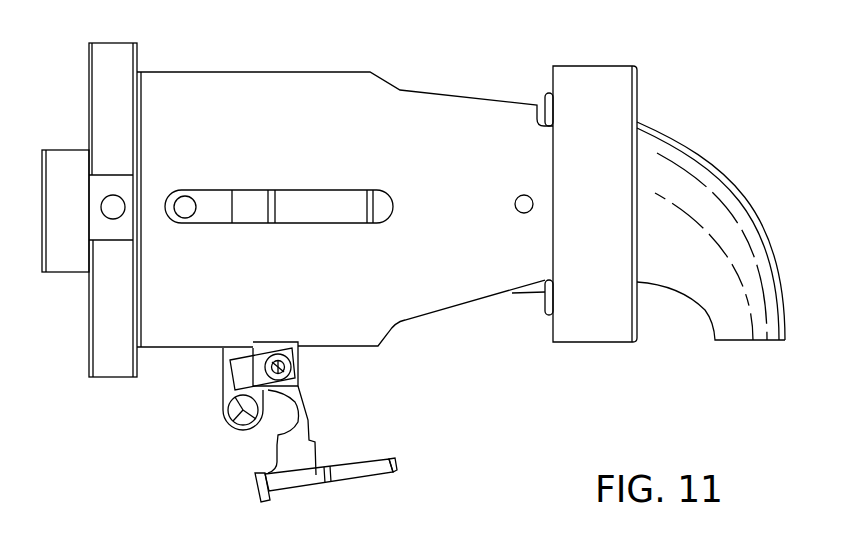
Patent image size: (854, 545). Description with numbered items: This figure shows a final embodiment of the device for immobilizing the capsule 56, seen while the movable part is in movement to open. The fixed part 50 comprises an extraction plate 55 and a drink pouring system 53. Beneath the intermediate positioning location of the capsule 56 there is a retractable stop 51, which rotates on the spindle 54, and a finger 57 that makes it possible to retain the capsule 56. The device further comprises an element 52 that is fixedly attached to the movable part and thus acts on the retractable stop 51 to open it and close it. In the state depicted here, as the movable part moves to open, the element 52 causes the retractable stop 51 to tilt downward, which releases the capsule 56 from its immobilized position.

The fixed part 50 is at (368, 98).
The retractable stop 51 is at (297, 473).
The element 52 is at (237, 413).
The drink pouring system 53 is at (710, 187).
The spindle 54 is at (297, 365).
The extraction plate 55 is at (618, 82).
The capsule 56 is at (539, 102).
The finger 57 is at (400, 467).